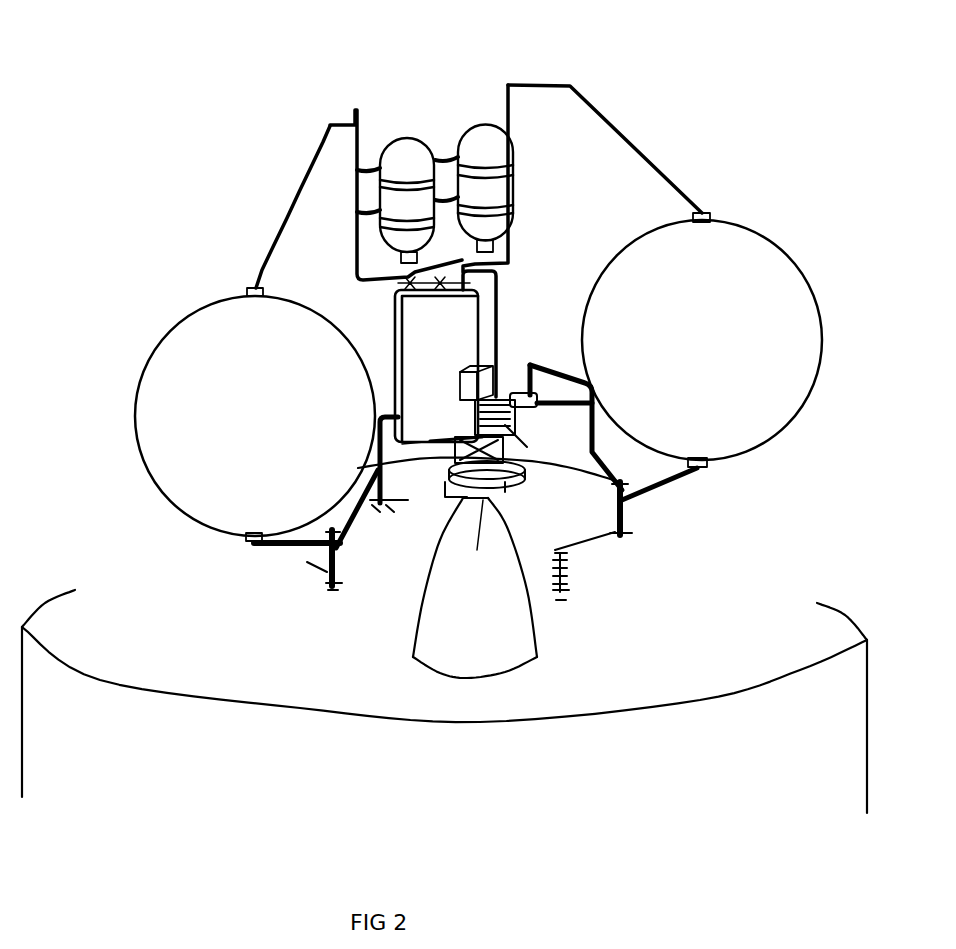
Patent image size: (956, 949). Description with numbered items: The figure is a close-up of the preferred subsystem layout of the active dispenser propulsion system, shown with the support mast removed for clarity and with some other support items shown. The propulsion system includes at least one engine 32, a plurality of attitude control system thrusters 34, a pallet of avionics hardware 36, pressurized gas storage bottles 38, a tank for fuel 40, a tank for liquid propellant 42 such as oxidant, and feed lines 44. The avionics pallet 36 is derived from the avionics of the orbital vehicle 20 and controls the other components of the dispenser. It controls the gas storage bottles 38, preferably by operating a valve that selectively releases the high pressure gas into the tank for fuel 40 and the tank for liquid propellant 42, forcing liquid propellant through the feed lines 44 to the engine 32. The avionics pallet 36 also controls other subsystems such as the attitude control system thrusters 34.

The K-1 orbital vehicle 20 is at (863, 782).
The engine 32 is at (492, 670).
The attitude control system thrusters 34 is at (340, 580).
The pallet of avionics hardware 36 is at (467, 318).
The pressurized gas storage bottles 38 is at (405, 150).
The tank for fuel 40 is at (188, 494).
The tank for liquid propellant 42 is at (723, 448).
The feed lines 44 is at (650, 508).